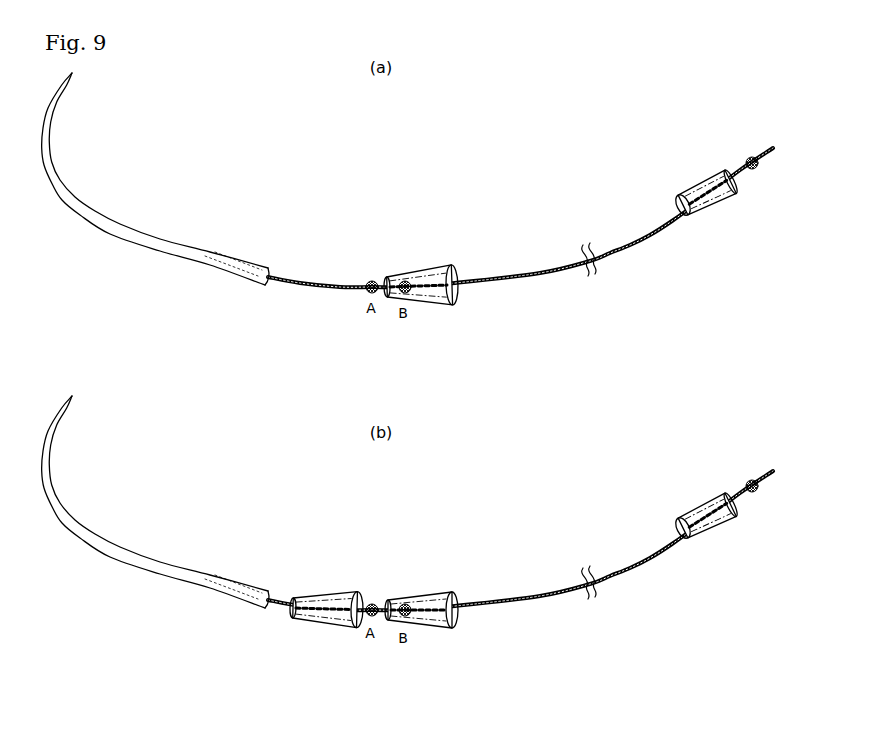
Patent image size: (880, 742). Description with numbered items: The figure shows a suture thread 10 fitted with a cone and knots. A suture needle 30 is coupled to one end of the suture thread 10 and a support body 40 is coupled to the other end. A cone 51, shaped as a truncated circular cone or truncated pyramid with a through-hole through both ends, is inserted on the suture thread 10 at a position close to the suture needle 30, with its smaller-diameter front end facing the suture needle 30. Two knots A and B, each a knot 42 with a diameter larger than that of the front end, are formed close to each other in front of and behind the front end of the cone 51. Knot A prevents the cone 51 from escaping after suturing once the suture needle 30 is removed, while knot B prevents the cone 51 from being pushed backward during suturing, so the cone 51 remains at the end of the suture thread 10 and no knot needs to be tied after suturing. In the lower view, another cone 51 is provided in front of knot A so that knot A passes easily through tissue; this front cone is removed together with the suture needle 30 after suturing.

The suture thread 10 is at (633, 248).
The suture needle 30 is at (152, 254).
The support body 40 is at (722, 205).
The knot 42 is at (366, 279).
The cone 51 is at (423, 302).